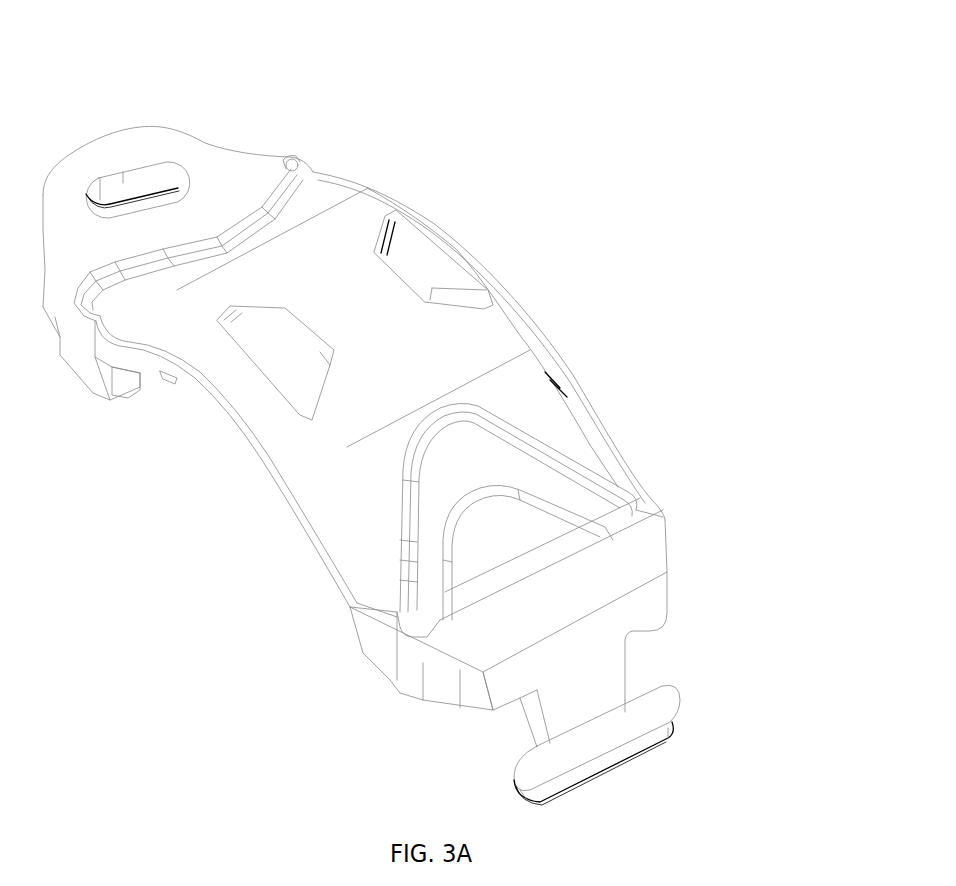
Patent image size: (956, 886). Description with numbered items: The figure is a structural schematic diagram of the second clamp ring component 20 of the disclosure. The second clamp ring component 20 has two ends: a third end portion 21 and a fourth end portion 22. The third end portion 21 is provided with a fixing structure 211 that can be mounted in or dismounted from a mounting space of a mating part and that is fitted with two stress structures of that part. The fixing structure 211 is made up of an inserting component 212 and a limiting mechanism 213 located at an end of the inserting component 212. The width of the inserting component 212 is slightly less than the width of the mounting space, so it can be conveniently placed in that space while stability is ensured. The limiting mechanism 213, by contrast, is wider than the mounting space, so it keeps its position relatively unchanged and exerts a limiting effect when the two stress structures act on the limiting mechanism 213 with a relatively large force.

The second clamp ring component 20 is at (458, 232).
The third end portion 21 is at (597, 580).
The fourth end portion 22 is at (153, 147).
The fixing structure 211 is at (685, 691).
The inserting component 212 is at (625, 663).
The limiting mechanism 213 is at (677, 715).